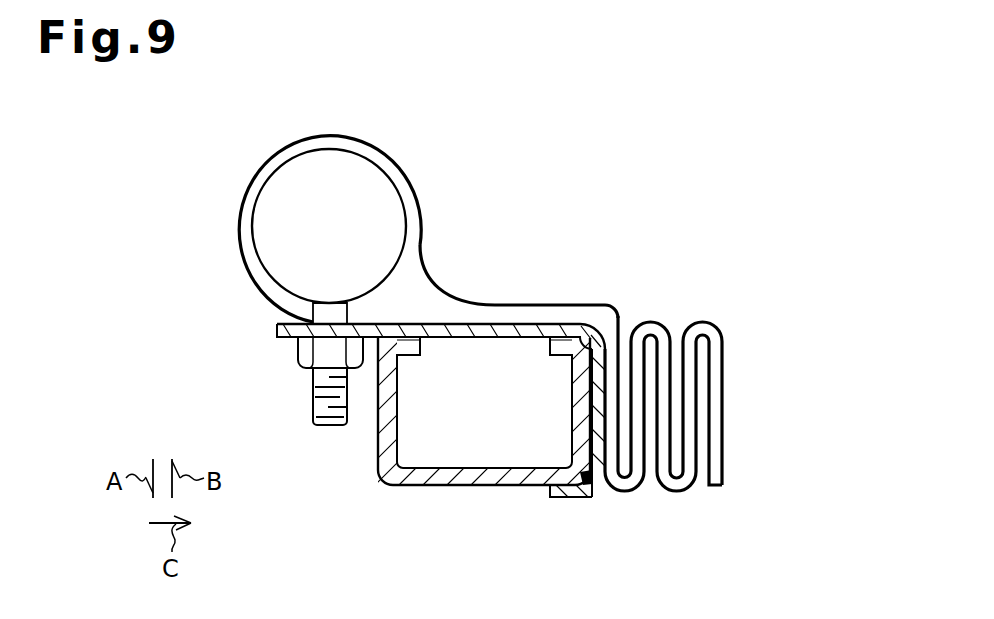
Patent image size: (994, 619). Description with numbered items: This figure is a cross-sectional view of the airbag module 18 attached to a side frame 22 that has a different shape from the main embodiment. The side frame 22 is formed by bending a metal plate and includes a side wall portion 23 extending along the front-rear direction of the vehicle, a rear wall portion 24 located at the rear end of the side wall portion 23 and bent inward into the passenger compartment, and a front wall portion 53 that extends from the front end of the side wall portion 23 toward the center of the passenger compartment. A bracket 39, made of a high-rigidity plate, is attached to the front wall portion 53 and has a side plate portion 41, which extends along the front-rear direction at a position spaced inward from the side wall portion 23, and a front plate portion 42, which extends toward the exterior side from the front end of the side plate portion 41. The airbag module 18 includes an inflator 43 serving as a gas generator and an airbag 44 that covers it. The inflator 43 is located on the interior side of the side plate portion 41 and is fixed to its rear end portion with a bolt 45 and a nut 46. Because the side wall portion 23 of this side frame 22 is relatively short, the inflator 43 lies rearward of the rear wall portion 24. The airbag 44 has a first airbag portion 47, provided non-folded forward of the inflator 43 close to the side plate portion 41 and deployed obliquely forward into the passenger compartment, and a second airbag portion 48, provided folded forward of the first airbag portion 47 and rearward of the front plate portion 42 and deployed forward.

The airbag module 18 is at (551, 179).
The inflator 43 is at (378, 182).
The first airbag portion 47 is at (502, 303).
The airbag 44 is at (580, 303).
The second airbag portion 48 is at (724, 411).
The nut 46 is at (304, 350).
The bolt 45 is at (320, 395).
The front wall portion 53 is at (583, 401).
The front plate portion 42 is at (592, 444).
The bracket 39 is at (567, 498).
The side plate portion 41 is at (432, 338).
The side frame 22 is at (484, 446).
The rear wall portion 24 is at (393, 434).
The side wall portion 23 is at (437, 487).